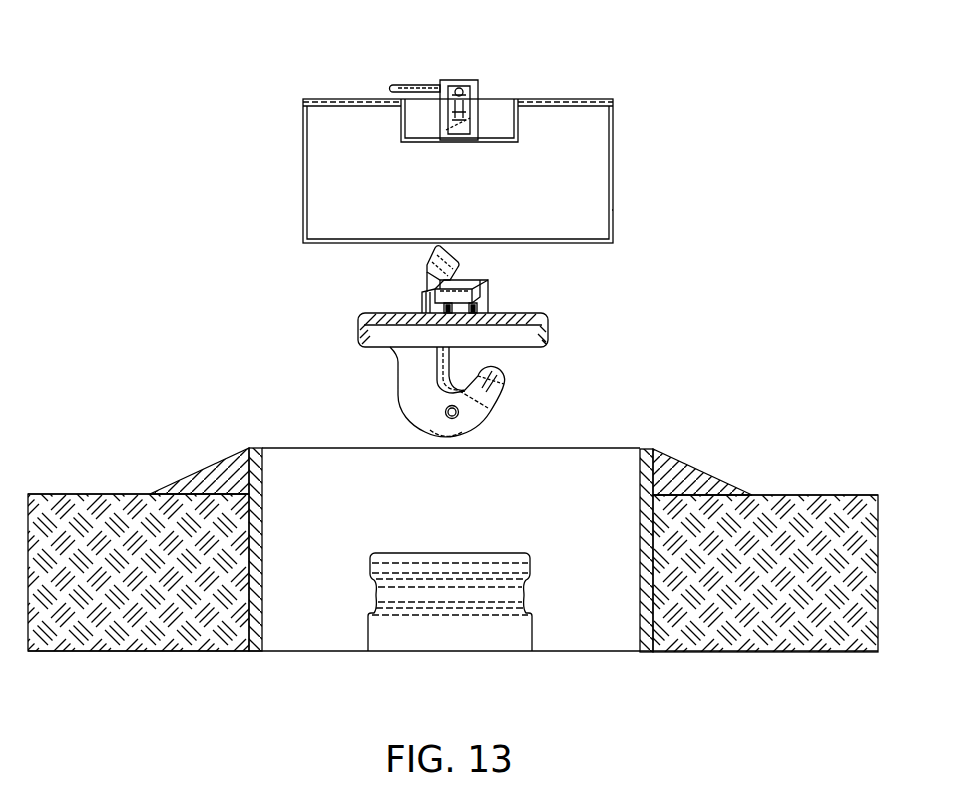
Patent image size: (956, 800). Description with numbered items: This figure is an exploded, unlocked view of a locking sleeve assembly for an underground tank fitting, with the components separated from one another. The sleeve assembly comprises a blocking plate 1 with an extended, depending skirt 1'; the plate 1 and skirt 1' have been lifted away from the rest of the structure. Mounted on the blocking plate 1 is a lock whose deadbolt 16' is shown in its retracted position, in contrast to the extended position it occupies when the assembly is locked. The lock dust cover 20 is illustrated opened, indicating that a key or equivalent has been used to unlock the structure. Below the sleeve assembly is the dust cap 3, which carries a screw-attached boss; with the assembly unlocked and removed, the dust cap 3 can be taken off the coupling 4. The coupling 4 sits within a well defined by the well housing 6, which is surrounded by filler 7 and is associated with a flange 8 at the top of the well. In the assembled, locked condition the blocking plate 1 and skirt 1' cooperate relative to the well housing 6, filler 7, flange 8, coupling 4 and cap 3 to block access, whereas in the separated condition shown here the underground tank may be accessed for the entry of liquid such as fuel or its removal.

The blocking plate 1 is at (464, 148).
The extended skirt 1' is at (587, 202).
The deadbolt 16' is at (440, 131).
The lock dust cover 20 is at (415, 82).
The dust cap 3 is at (549, 325).
The coupling 4 is at (366, 632).
The well housing 6 is at (648, 542).
The filler 7 is at (734, 519).
The flange 8 is at (678, 477).